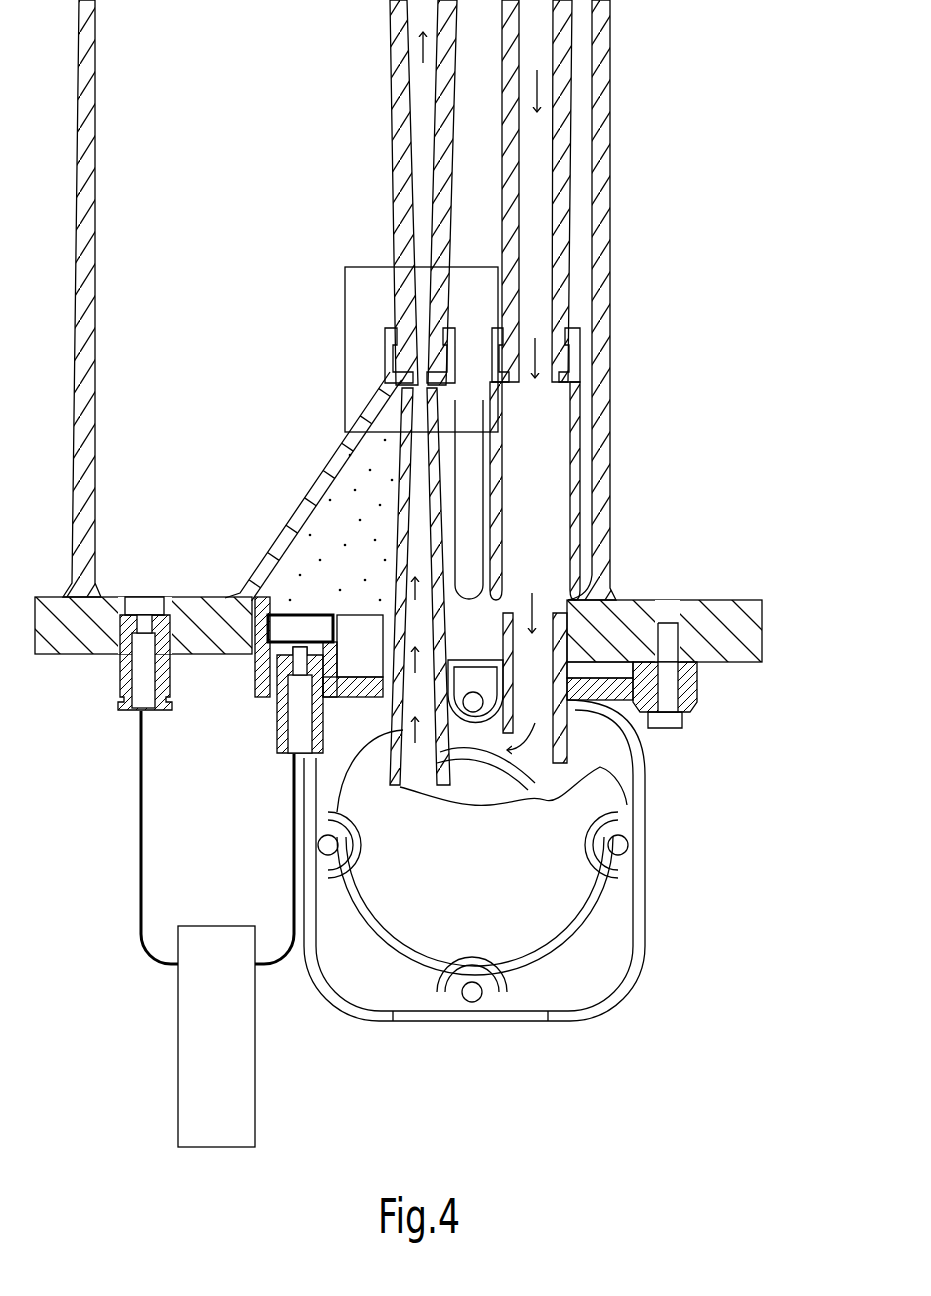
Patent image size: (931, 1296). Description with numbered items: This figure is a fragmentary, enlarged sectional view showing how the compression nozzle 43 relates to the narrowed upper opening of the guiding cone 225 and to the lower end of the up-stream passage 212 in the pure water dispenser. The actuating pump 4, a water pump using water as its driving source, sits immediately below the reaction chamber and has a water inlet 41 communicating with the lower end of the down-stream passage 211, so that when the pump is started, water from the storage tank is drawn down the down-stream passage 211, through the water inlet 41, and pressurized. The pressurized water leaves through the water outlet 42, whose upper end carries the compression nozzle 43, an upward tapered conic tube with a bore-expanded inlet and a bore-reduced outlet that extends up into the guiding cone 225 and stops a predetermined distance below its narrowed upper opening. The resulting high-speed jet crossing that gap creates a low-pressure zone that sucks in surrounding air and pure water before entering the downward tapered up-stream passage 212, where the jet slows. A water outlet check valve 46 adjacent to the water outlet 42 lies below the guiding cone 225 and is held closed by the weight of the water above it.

The up-stream passage 212 is at (392, 88).
The down-stream passage 211 is at (596, 69).
The guiding cone 225 is at (385, 350).
The water inlet 41 is at (530, 667).
The water outlet 42 is at (420, 745).
The compression nozzle 43 is at (395, 512).
The water outlet check valve 46 is at (300, 680).
The actuating pump 4 is at (533, 885).